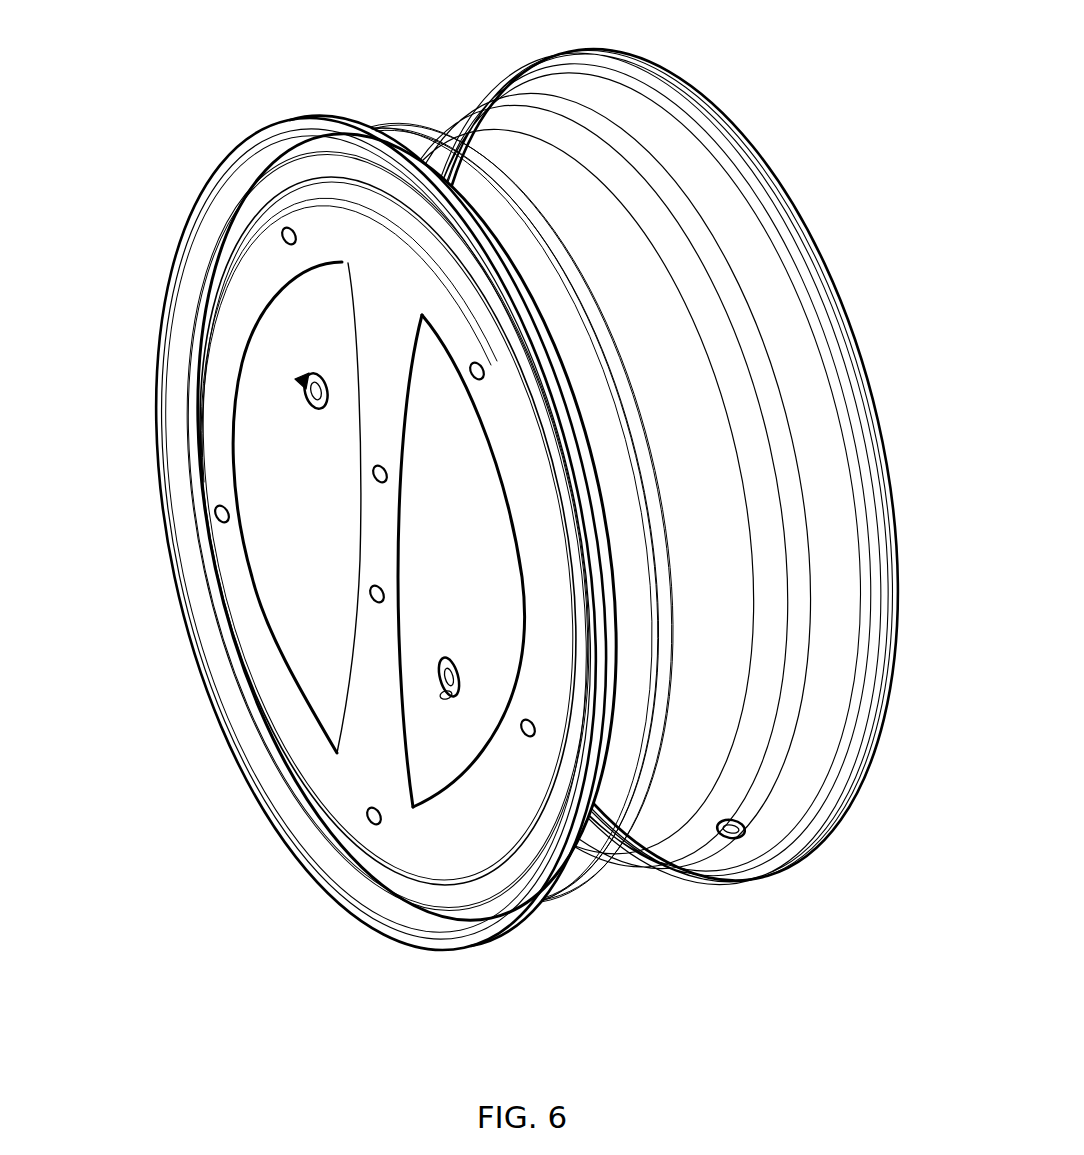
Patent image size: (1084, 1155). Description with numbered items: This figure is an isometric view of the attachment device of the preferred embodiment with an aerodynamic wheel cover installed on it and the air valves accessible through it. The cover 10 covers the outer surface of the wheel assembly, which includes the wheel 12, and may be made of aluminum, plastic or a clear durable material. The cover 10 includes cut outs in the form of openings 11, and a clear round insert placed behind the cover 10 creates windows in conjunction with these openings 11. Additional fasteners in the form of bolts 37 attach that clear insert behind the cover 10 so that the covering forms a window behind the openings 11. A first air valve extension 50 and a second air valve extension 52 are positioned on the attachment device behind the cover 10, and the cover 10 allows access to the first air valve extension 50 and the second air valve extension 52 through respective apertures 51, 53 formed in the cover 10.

The cover 10 is at (485, 830).
The openings 11 is at (290, 598).
The wheel 12 is at (677, 72).
The bolts 37 is at (293, 230).
The first air valve extension 50 is at (306, 398).
The aperture 51 is at (303, 372).
The second air valve extension 52 is at (440, 679).
The aperture 53 is at (442, 691).